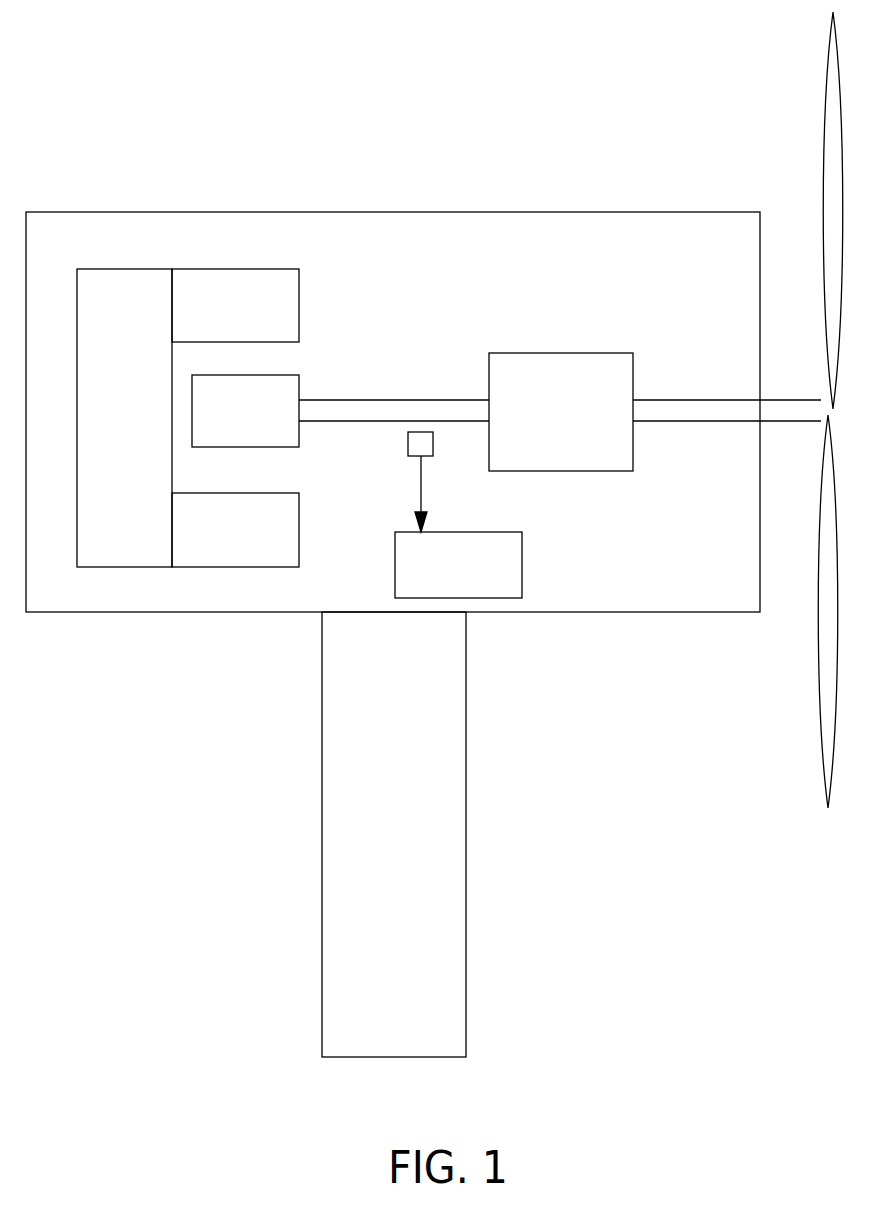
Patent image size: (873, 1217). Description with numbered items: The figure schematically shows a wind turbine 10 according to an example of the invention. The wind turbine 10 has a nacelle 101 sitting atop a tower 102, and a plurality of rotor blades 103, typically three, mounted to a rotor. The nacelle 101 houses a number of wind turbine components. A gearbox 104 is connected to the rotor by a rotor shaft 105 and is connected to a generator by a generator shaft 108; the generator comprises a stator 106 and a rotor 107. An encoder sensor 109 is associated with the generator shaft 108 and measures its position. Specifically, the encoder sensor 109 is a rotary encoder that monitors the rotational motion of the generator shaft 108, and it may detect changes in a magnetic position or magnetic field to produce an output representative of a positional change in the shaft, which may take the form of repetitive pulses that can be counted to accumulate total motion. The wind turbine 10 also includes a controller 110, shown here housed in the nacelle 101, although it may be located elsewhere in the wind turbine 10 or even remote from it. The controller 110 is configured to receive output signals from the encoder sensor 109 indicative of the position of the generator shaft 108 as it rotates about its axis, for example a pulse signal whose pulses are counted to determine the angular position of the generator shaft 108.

The wind turbine 10 is at (232, 143).
The nacelle 101 is at (645, 612).
The tower 102 is at (466, 858).
The rotor blades 103 is at (823, 71).
The gearbox 104 is at (560, 353).
The rotor shaft 105 is at (687, 421).
The stator 106 is at (183, 269).
The rotor 107 is at (300, 390).
The generator shaft 108 is at (443, 400).
The encoder sensor 109 is at (415, 457).
The controller 110 is at (493, 598).